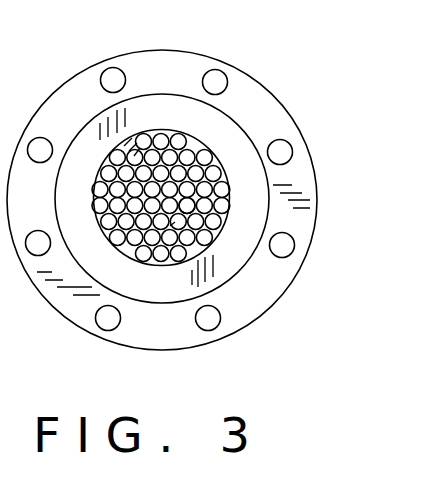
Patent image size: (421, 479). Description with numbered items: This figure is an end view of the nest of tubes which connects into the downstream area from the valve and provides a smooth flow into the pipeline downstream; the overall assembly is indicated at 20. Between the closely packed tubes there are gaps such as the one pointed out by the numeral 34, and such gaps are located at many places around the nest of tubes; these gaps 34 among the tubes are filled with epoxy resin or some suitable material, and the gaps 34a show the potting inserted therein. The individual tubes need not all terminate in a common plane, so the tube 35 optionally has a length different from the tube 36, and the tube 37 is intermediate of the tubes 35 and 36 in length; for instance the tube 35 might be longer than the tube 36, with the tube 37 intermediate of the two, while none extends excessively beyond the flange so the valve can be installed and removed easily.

The cable assembly 20 is at (152, 114).
The gaps 34 is at (200, 140).
The gaps with potting 34a is at (130, 140).
The tube 35 is at (172, 222).
The tube 36 is at (217, 240).
The tube 37 is at (192, 208).